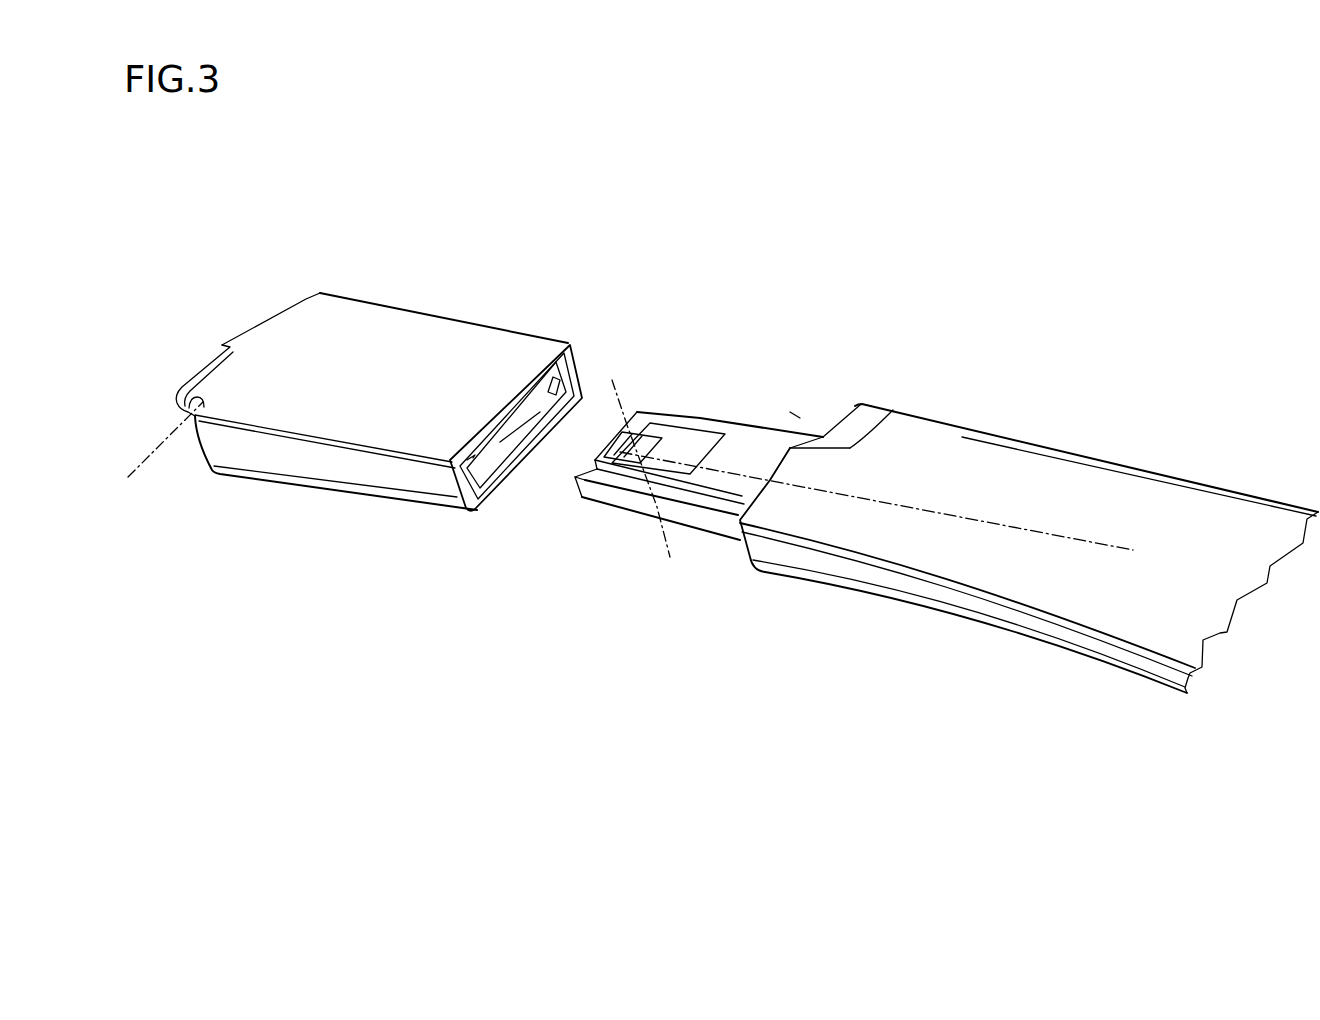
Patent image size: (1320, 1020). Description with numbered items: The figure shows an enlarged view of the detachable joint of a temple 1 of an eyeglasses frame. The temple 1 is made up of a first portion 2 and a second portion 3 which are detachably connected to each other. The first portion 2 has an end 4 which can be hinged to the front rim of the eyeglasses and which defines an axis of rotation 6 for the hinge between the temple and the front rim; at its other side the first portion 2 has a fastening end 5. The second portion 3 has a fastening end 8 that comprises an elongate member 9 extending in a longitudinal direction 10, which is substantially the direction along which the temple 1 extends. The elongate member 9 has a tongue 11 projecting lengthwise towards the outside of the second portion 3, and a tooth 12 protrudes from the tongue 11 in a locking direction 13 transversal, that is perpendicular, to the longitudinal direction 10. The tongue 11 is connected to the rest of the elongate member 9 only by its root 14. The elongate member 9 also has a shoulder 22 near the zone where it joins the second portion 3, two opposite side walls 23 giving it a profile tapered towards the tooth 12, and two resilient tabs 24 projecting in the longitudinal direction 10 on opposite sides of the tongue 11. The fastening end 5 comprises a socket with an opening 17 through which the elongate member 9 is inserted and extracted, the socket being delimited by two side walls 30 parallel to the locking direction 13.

The temple 1 is at (1037, 403).
The first portion 2 is at (355, 290).
The second portion 3 is at (1133, 612).
The end 4 is at (222, 343).
The fastening end 5 is at (448, 482).
The axis of rotation 6 is at (142, 464).
The fastening end 8 is at (783, 510).
The elongate member 9 is at (600, 515).
The longitudinal direction 10 is at (1022, 530).
The tongue 11 is at (704, 418).
The tooth 12 is at (603, 517).
The locking direction 13 is at (625, 386).
The root 14 is at (790, 412).
The opening 17 is at (507, 440).
The shoulder 22 is at (893, 410).
The side walls 23 is at (700, 512).
The resilient tabs 24 is at (685, 412).
The side walls 30 is at (576, 398).